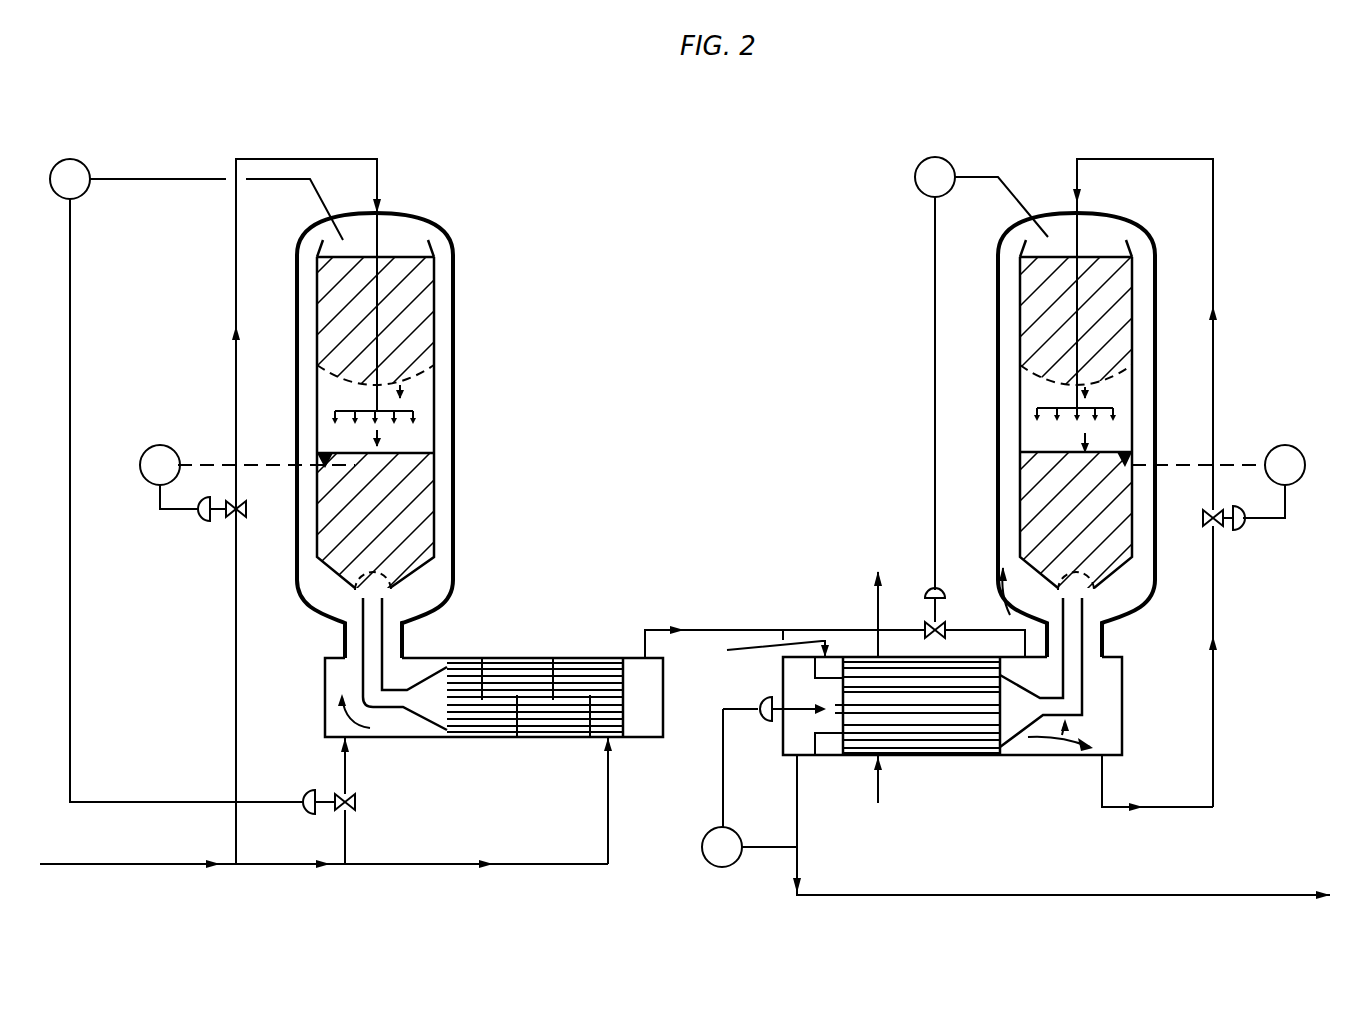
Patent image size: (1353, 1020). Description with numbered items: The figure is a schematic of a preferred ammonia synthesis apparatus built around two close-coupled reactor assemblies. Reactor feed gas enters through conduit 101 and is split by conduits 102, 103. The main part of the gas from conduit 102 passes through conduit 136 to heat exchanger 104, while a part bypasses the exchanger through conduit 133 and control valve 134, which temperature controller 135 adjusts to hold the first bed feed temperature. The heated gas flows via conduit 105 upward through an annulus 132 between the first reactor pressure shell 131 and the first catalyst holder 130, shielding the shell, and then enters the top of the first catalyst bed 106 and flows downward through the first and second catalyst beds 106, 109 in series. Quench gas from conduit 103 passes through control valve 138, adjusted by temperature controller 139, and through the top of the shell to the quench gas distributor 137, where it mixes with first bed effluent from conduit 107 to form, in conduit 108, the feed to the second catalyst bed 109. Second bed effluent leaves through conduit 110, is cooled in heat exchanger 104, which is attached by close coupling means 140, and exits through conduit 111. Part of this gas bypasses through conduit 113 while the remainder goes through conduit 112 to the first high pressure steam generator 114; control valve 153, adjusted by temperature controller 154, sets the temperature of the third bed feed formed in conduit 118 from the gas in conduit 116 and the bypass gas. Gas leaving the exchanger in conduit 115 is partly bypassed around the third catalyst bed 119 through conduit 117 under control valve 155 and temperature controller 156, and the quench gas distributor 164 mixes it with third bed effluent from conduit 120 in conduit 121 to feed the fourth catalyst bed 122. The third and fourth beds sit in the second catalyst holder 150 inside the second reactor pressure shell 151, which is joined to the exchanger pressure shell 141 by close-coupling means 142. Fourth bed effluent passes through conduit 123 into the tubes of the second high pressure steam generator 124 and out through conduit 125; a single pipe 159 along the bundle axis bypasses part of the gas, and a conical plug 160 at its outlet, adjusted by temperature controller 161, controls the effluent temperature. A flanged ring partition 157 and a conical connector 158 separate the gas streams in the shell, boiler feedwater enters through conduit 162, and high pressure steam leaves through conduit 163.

The conduit 101 is at (175, 866).
The conduit 102 is at (262, 866).
The conduit 103 is at (234, 718).
The heat exchanger 104 is at (517, 662).
The conduit 105 is at (340, 715).
The first catalyst bed 106 is at (430, 270).
The conduit 107 is at (402, 393).
The conduit 108 is at (380, 443).
The second catalyst bed 109 is at (420, 521).
The conduit 110 is at (385, 638).
The conduit 111 is at (697, 628).
The conduit 112 is at (757, 649).
The conduit 113 is at (787, 628).
The high pressure steam generator 114 is at (860, 662).
The conduit 115 is at (1050, 757).
The conduit 116 is at (1070, 728).
The conduit 117 is at (1215, 730).
The conduit 118 is at (1011, 602).
The third catalyst bed 119 is at (1117, 275).
The conduit 120 is at (1090, 390).
The conduit 121 is at (1090, 438).
The fourth catalyst bed 122 is at (1028, 470).
The conduit 123 is at (1085, 683).
The second high pressure steam generator 124 is at (965, 692).
The conduit 125 is at (973, 895).
The first catalyst holder 130 is at (435, 302).
The first reactor pressure shell 131 is at (455, 332).
The annulus 132 is at (444, 468).
The conduit 133 is at (345, 838).
The control valve 134 is at (355, 802).
The temperature controller 135 is at (83, 195).
The conduit 136 is at (545, 866).
The quench gas distributor 137 is at (406, 406).
The control valve 138 is at (228, 522).
The temperature controller 139 is at (160, 445).
The close coupling means 140 is at (345, 633).
The exchanger pressure shell 141 is at (927, 757).
The close-coupling means 142 is at (1103, 637).
The second catalyst holder 150 is at (1137, 313).
The second reactor pressure shell 151 is at (1158, 362).
The control valve 153 is at (944, 606).
The temperature controller 154 is at (915, 190).
The control valve 155 is at (1215, 530).
The temperature controller 156 is at (1300, 449).
The flanged ring partition 157 is at (815, 668).
The conical connector 158 is at (1002, 757).
The single pipe 159 is at (875, 713).
The conical plug 160 is at (825, 708).
The temperature controller 161 is at (728, 865).
The conduit 162 is at (875, 790).
The conduit 163 is at (877, 612).
The quench gas distributor 164 is at (1039, 407).